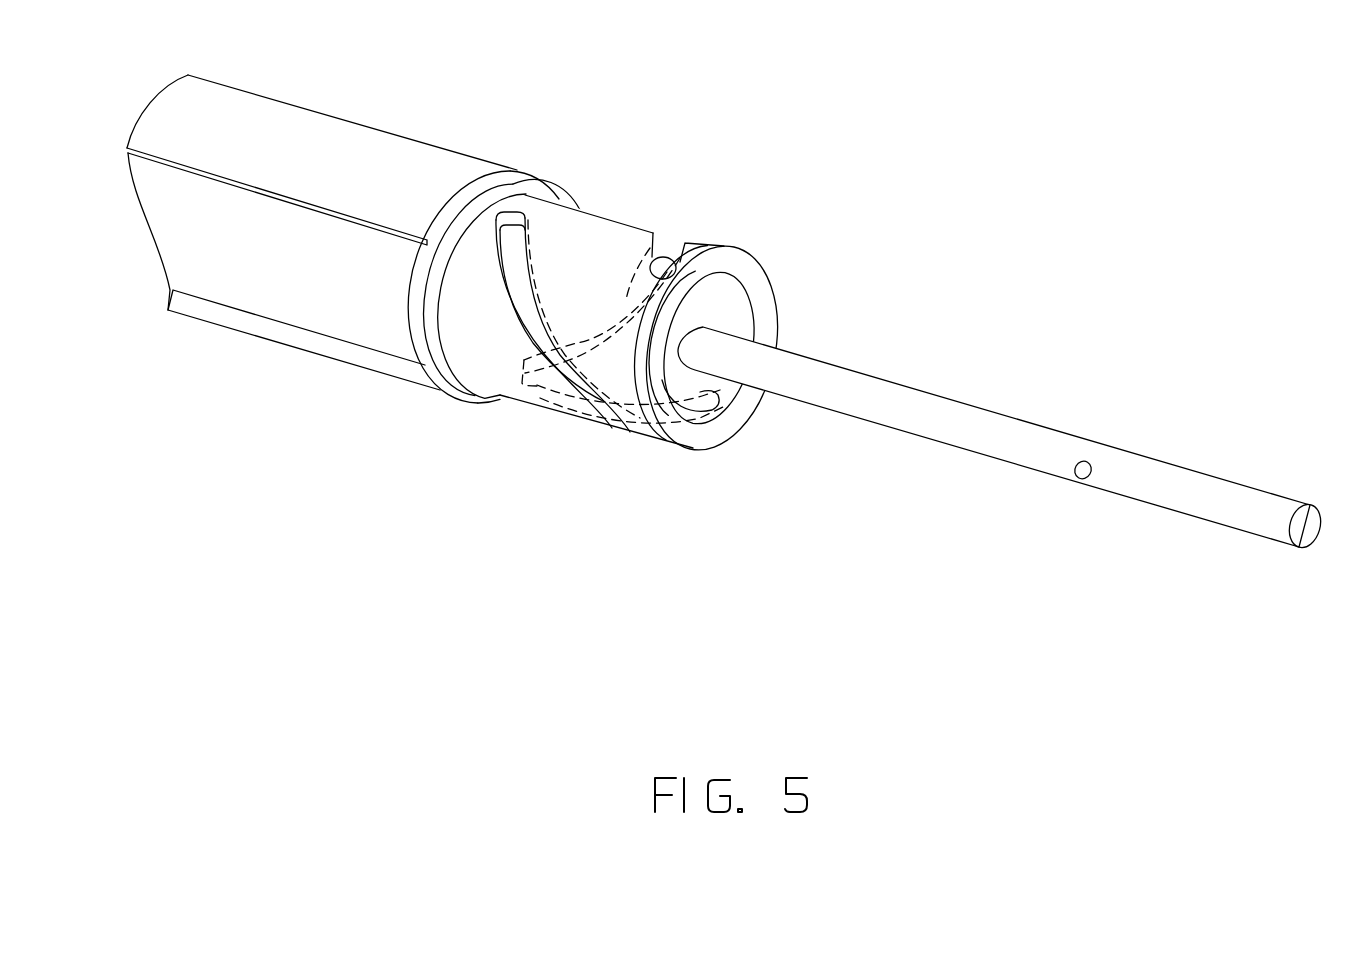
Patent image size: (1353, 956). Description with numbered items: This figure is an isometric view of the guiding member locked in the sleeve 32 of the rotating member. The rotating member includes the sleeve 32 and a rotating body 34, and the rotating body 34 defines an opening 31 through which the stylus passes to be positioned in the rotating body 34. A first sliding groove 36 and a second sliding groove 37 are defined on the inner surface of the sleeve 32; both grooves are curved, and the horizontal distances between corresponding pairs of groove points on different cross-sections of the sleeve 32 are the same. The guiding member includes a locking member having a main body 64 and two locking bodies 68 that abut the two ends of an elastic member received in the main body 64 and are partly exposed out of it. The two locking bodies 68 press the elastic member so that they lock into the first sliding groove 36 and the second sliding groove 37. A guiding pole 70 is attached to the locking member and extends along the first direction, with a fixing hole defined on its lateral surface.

The opening 31 is at (190, 247).
The rotating body 34 is at (263, 330).
The sleeve 32 is at (585, 230).
The first sliding groove 36 is at (510, 232).
The second sliding groove 37 is at (624, 315).
The locking body 68 is at (661, 263).
The main body 64 is at (687, 318).
The guiding pole 70 is at (908, 408).